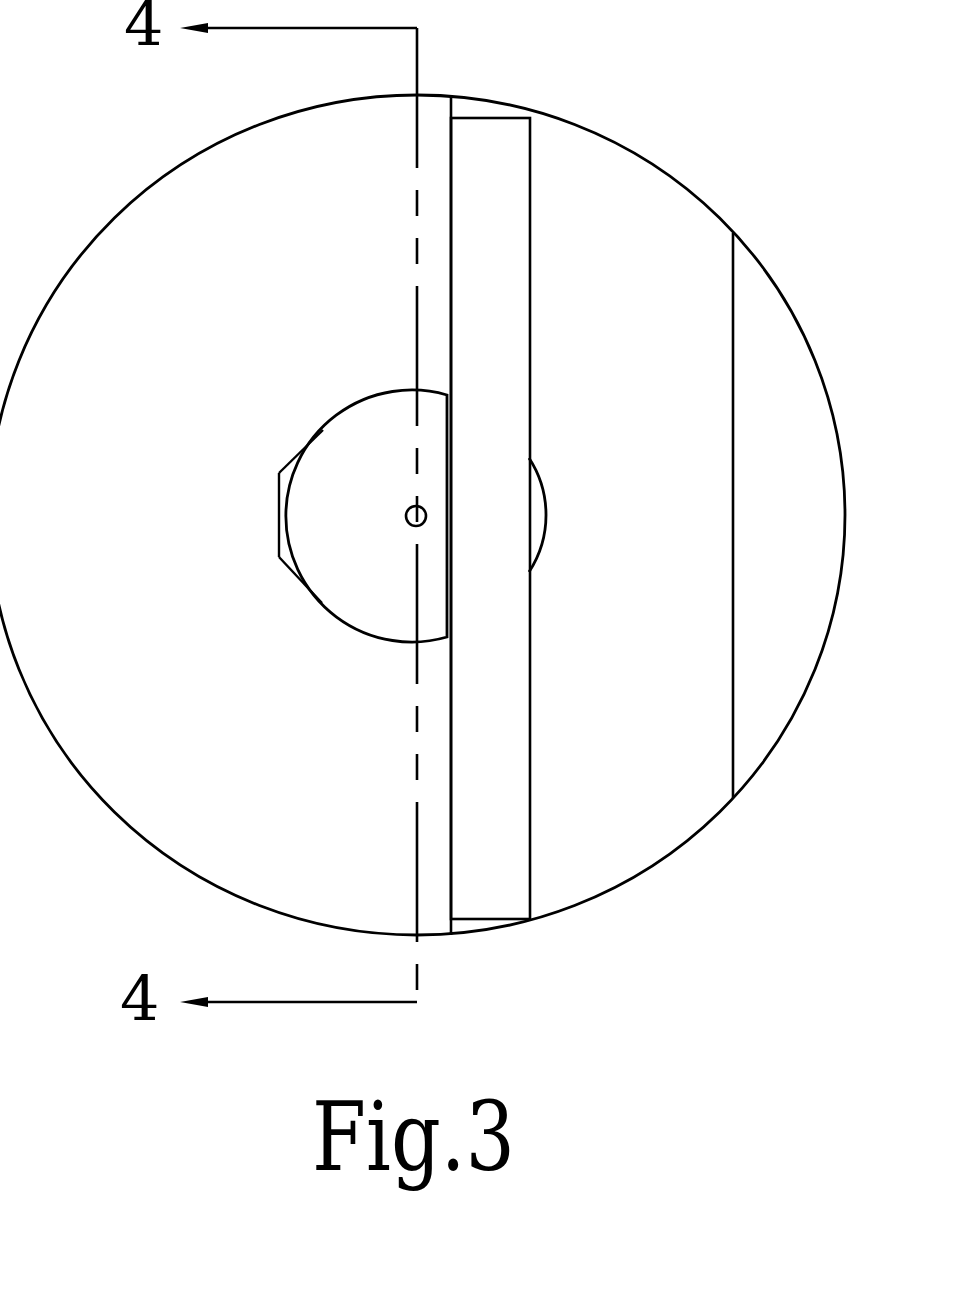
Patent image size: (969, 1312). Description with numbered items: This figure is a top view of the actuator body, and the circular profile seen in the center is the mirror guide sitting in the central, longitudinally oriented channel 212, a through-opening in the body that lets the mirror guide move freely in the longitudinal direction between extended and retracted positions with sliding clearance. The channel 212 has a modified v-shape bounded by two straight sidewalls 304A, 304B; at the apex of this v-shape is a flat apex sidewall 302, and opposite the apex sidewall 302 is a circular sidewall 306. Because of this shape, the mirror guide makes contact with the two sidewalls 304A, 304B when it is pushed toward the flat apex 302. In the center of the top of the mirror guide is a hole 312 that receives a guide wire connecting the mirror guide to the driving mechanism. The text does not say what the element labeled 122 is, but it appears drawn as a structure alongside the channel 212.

The frame member 122 is at (530, 318).
The channel 212 is at (393, 642).
The flat apex sidewall 302 is at (279, 522).
The straight sidewall 304A is at (296, 580).
The straight sidewall 304B is at (293, 459).
The circular sidewall 306 is at (540, 478).
The hole 312 is at (427, 516).